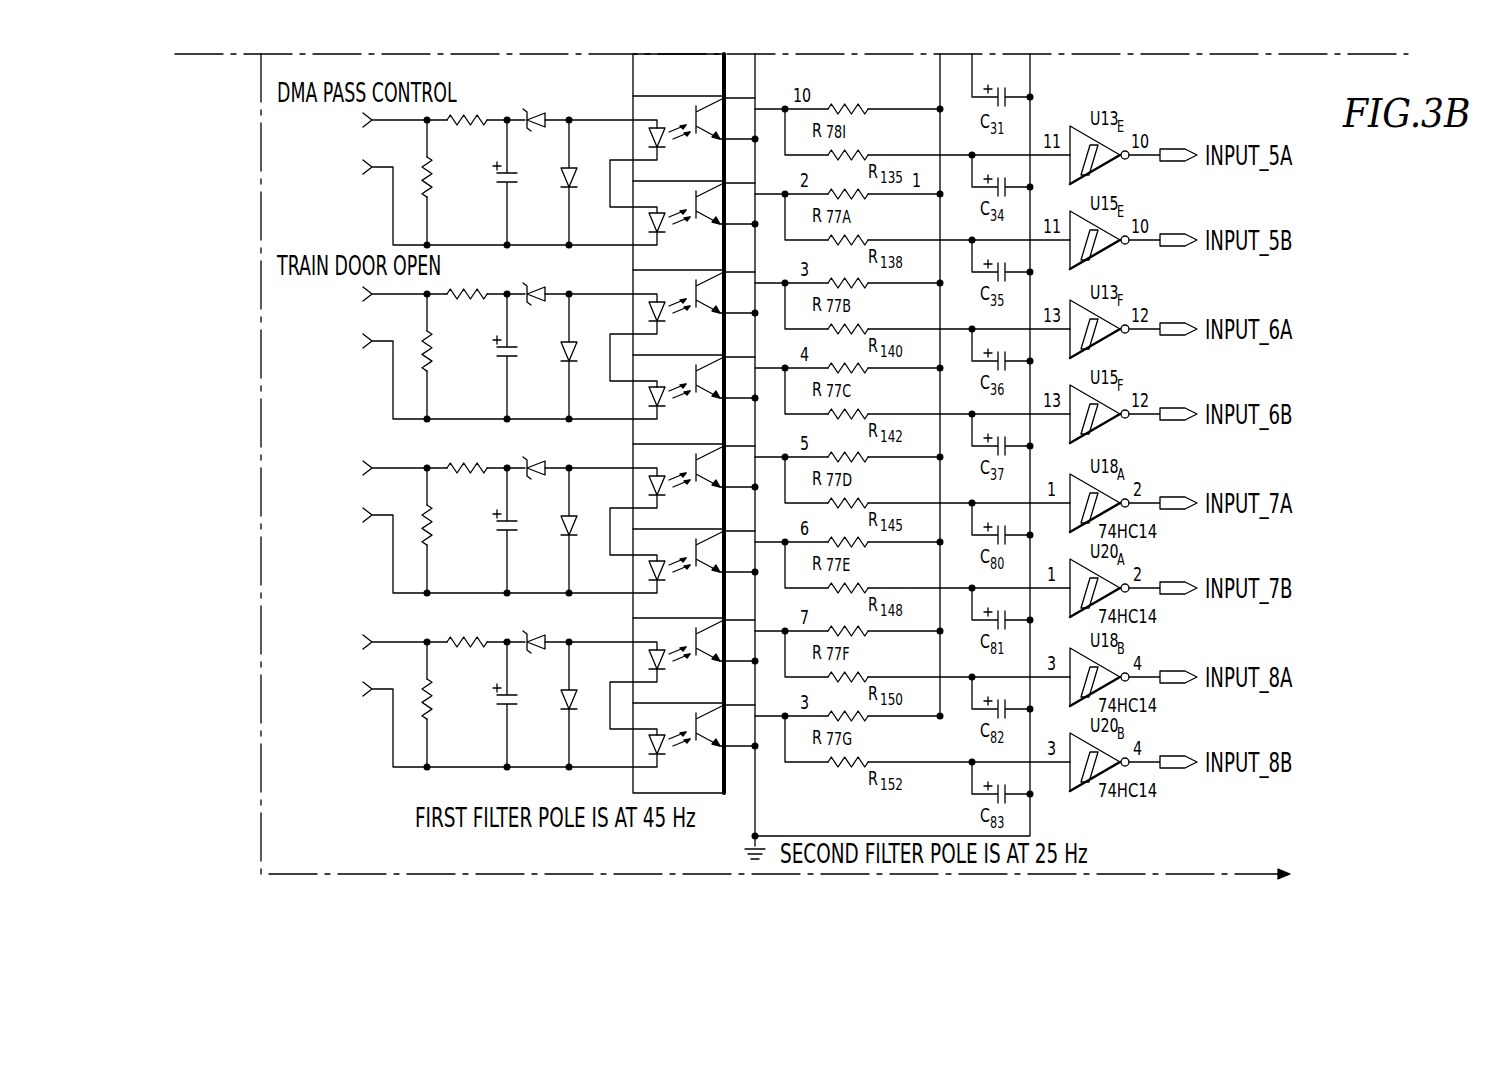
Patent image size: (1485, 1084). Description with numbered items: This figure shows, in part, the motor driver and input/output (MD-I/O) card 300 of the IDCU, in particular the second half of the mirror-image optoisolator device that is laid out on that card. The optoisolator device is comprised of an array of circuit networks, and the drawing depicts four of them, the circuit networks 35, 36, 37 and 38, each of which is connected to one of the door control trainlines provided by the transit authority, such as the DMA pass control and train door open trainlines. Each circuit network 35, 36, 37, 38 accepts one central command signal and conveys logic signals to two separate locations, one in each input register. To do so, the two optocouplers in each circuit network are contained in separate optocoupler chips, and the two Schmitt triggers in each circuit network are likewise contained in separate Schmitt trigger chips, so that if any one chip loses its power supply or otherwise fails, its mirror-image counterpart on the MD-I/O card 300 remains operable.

The circuit network 35 is at (246, 121).
The circuit network 36 is at (246, 295).
The circuit network 37 is at (246, 473).
The circuit network 38 is at (246, 645).
The motor driver and input/output (MD-I/O) card 300 is at (261, 832).